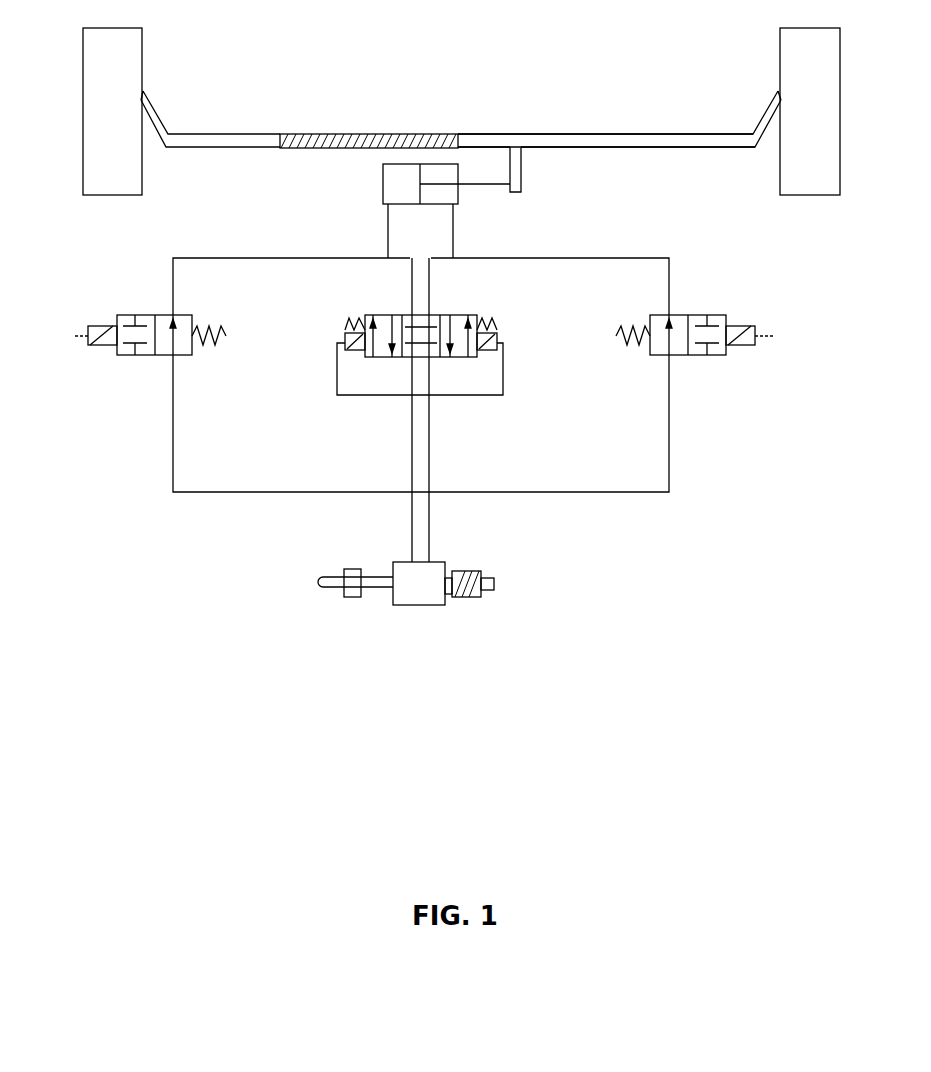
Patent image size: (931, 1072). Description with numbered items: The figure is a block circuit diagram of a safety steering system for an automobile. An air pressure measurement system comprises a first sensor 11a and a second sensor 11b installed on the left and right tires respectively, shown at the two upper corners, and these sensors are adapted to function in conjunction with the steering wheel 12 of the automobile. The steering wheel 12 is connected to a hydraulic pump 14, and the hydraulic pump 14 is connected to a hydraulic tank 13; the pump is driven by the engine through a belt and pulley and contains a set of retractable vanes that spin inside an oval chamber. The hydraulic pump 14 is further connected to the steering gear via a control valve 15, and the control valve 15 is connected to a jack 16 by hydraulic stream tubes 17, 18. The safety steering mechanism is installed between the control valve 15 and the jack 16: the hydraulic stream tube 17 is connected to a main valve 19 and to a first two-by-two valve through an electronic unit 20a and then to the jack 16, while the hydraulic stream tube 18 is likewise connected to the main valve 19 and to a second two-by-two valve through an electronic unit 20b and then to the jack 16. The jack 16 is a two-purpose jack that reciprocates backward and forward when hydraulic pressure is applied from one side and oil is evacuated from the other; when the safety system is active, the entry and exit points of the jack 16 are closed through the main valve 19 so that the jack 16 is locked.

The first sensor 11a is at (93, 165).
The second sensor 11b is at (830, 165).
The steering wheel 12 is at (320, 586).
The hydraulic tank 13 is at (412, 606).
The hydraulic pump 14 is at (437, 606).
The control valve 15 is at (447, 598).
The jack 16 is at (403, 181).
The hydraulic stream tube 17 is at (388, 235).
The hydraulic stream tube 18 is at (453, 235).
The main valve 19 is at (486, 396).
The electronic unit 20a is at (143, 357).
The electronic unit 20b is at (702, 357).